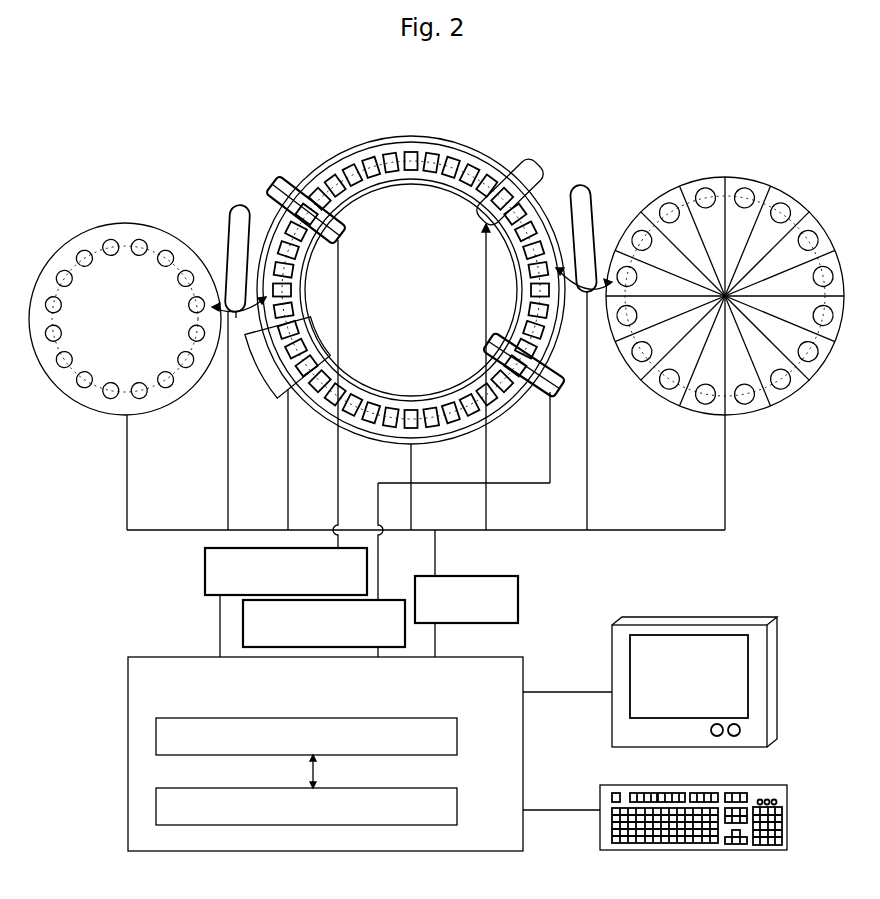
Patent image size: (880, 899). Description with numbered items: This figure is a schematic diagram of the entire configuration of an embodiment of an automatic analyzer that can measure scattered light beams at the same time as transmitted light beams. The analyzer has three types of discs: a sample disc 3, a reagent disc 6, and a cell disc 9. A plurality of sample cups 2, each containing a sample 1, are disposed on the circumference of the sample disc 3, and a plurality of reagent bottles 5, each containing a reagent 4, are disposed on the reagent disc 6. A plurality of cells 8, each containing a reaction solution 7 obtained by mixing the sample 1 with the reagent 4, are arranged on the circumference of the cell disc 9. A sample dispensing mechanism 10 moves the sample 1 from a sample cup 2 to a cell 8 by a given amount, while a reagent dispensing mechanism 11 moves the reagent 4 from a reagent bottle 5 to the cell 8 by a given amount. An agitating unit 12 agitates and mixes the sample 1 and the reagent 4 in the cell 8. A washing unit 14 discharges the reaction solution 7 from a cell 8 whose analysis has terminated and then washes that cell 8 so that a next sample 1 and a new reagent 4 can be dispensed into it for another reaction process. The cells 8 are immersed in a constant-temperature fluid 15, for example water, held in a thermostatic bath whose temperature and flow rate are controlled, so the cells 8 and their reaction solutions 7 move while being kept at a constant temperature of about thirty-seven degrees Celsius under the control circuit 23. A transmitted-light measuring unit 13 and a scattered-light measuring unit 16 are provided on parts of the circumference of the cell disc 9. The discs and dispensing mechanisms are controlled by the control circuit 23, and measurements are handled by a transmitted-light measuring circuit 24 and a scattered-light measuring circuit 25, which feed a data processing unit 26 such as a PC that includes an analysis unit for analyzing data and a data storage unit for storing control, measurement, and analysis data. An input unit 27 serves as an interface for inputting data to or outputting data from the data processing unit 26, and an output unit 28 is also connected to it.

The sample 1 is at (148, 224).
The sample cup 2 is at (112, 236).
The sample disc 3 is at (80, 234).
The reagent 4 is at (745, 188).
The reagent bottle 5 is at (706, 188).
The reagent disc 6 is at (670, 190).
The reaction solution 7 is at (433, 152).
The cell 8 is at (411, 152).
The cell disc 9 is at (386, 136).
The sample dispensing mechanism 10 is at (232, 206).
The reagent dispensing mechanism 11 is at (584, 192).
The agitating unit 12 is at (534, 168).
The transmitted-light measuring unit 13 is at (280, 184).
The washing unit 14 is at (270, 394).
The constant-temperature fluid 15 is at (496, 172).
The scattered-light measuring unit 16 is at (544, 394).
The control circuit 23 is at (518, 592).
The transmitted-light measuring circuit 24 is at (205, 578).
The scattered-light measuring circuit 25 is at (243, 614).
The data processing unit 26 is at (156, 700).
The input unit 27 is at (693, 806).
The output unit 28 is at (694, 670).